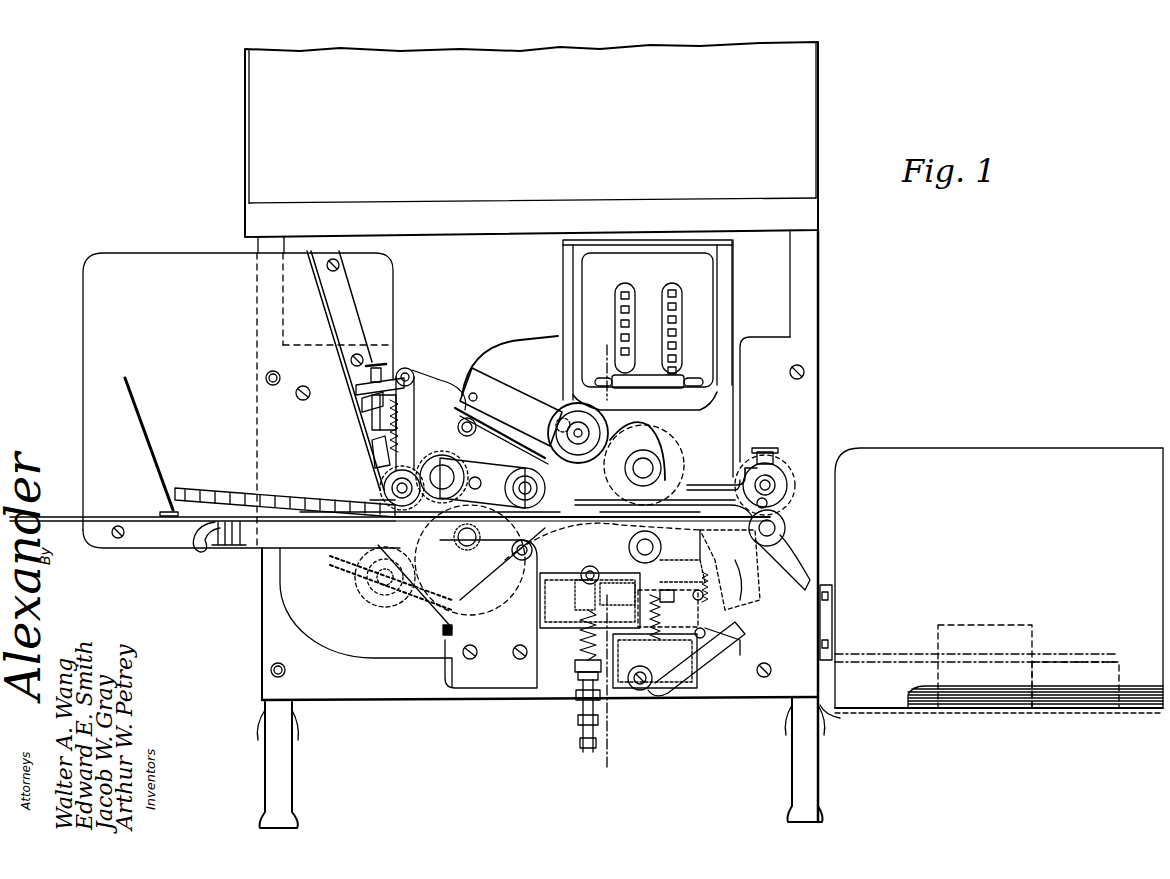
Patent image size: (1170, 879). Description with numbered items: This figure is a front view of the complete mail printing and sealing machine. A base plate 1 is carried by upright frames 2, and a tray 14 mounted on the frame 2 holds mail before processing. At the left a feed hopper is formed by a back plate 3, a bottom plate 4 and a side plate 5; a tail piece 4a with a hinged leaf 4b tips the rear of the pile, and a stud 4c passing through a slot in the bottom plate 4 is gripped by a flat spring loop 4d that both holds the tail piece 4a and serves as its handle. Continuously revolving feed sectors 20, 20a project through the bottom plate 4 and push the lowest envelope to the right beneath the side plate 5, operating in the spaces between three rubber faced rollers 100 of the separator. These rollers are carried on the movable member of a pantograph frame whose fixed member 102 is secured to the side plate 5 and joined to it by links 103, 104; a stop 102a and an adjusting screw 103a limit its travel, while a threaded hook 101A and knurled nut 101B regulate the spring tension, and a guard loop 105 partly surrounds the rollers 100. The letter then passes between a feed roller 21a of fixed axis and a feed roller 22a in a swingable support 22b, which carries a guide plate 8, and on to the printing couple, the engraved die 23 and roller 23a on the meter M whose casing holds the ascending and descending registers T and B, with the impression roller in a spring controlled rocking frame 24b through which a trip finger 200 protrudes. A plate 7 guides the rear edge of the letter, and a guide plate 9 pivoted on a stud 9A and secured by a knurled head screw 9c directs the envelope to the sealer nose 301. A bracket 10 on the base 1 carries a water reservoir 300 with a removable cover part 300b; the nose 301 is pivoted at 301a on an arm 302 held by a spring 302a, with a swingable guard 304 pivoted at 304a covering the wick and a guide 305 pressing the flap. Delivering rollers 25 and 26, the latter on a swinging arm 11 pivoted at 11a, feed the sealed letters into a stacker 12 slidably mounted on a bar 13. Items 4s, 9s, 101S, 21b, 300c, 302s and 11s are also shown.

The tray 14 is at (810, 150).
The frames 2 is at (262, 755).
The back plate 3 is at (88, 306).
The side plate 5 is at (340, 310).
The bottom plate 4 is at (48, 518).
The tail piece 4a is at (200, 500).
The hinged leaf 4b is at (140, 406).
The stop 4s is at (160, 512).
The stud 4c is at (244, 547).
The flat spring loop 4d is at (196, 550).
The base plate 1 is at (808, 390).
The indicator mechanism M is at (640, 262).
The ascending registering mechanism T is at (615, 325).
The descending registering mechanism B is at (682, 322).
The bracket 10 is at (607, 353).
The engraved die 23 is at (578, 433).
The roller 23a is at (665, 440).
The stud 9A is at (632, 468).
The guide plate 9 is at (610, 505).
The plate 7 is at (705, 483).
The sealer nose 301 is at (663, 502).
The pin 9s is at (741, 494).
The knurled head screw 9c is at (770, 462).
The delivering roller 25 is at (775, 460).
The delivering roller 26 is at (790, 530).
The guide 305 is at (740, 555).
The swingable guard 304 is at (629, 547).
The pivot 304a is at (705, 585).
The feed roller 22a is at (530, 468).
The swingable support 22b is at (448, 455).
The guide plate 8 is at (482, 483).
The links 104 is at (384, 488).
The guard loop 105 is at (346, 485).
The knurled nut 101B is at (414, 372).
The threaded hook 101A is at (398, 410).
The spring 101S is at (400, 432).
The links 103 is at (393, 370).
The adjusting screw 103a is at (377, 362).
The stop 102a is at (370, 410).
The fixed member 102 is at (372, 450).
The trip finger 200 is at (467, 546).
The rubber faced rollers 100 is at (394, 570).
The feed sector 20a is at (340, 558).
The feed sector 20 is at (420, 590).
The rocking frame 24b is at (490, 590).
The feed roller 21a is at (575, 530).
The bar 21b is at (645, 508).
The water reservoir 300 is at (555, 628).
The removable cover part 300b is at (570, 595).
The slot 300c is at (617, 594).
The spring box 302s is at (655, 661).
The arm 302 is at (750, 641).
The spring 302a is at (705, 640).
The swinging arm 11 is at (718, 614).
The pivot 11a is at (668, 602).
The spring 11s is at (688, 587).
The stacker 12 is at (1070, 455).
The bar 13 is at (891, 646).
The pivot 301a is at (832, 610).